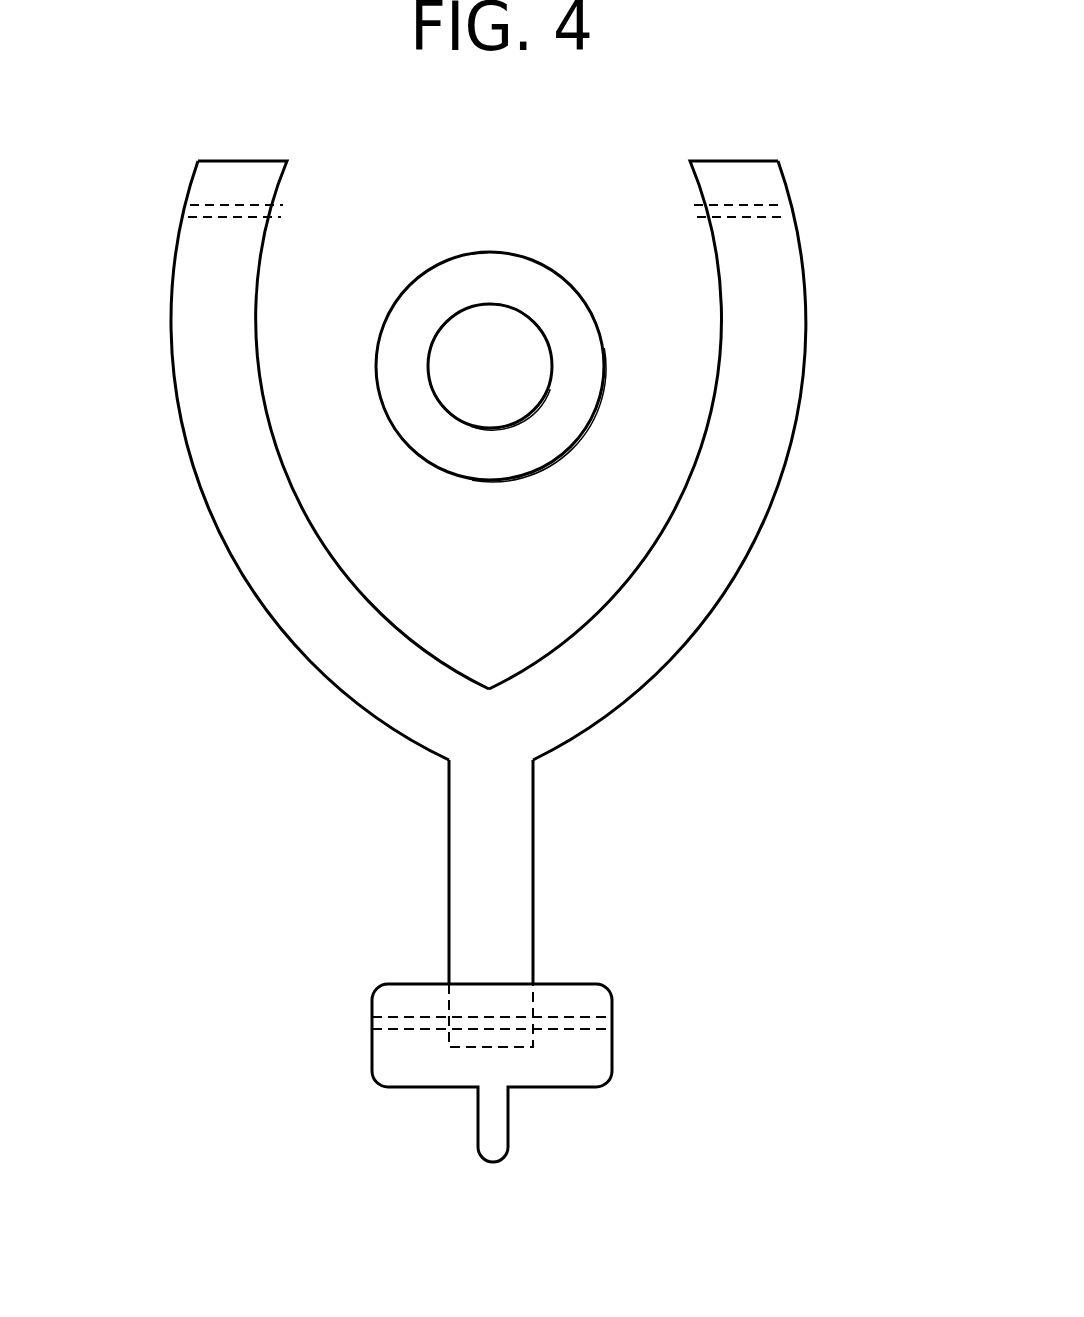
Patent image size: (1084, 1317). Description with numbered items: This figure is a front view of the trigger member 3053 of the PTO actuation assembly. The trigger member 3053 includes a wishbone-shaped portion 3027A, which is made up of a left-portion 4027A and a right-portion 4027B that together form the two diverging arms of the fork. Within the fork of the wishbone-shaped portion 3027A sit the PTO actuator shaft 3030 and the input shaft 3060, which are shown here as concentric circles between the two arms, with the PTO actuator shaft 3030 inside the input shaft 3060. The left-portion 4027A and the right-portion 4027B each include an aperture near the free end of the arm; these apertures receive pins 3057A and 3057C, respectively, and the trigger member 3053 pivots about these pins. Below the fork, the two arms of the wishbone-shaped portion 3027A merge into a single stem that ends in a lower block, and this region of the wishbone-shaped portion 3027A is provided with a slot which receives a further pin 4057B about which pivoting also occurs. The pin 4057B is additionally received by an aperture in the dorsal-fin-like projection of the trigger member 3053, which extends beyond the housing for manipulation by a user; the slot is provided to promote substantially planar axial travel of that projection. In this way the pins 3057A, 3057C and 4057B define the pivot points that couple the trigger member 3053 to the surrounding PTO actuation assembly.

The trigger member 3053 is at (592, 172).
The wishbone-shaped portion 3027A is at (342, 792).
The left-portion 4027A is at (215, 520).
The right-portion 4027B is at (772, 500).
The pin 3057A is at (195, 212).
The pin 3057C is at (795, 212).
The pin 4057B is at (612, 1020).
The PTO actuator shaft 3030 is at (470, 305).
The input shaft 3060 is at (410, 285).